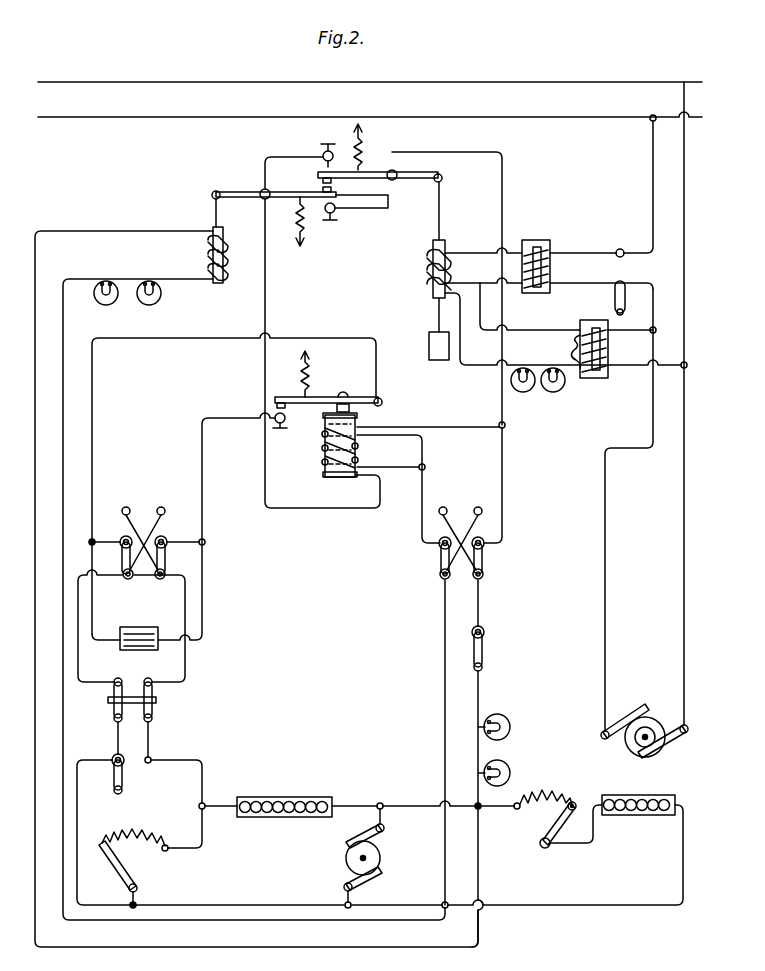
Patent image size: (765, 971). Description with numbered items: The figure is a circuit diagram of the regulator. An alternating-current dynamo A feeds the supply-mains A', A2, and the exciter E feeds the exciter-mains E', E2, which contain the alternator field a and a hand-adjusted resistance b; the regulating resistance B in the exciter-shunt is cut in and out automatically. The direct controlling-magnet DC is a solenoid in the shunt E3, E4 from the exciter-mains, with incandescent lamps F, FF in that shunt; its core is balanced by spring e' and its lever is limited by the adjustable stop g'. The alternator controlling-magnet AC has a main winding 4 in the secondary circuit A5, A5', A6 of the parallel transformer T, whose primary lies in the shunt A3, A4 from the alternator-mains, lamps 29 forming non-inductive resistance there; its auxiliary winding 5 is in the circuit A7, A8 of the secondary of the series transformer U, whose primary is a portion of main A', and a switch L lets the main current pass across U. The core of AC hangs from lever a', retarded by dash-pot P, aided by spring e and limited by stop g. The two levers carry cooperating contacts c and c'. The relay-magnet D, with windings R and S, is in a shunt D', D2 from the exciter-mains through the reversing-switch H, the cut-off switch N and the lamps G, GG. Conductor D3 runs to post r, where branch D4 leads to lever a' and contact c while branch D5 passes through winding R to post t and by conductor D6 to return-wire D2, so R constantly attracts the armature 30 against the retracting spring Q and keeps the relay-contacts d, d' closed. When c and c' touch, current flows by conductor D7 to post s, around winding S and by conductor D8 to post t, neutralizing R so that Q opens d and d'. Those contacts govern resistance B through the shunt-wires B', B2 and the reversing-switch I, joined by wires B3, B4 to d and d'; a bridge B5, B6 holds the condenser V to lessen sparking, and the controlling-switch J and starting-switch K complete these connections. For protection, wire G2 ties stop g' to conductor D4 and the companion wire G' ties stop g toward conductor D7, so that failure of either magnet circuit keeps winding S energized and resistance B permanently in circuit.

The supply-main A2 is at (686, 612).
The supply-main A' is at (603, 427).
The conductor D4 is at (505, 194).
The conductor D3 is at (504, 504).
The post r is at (495, 429).
The contact c is at (370, 180).
The lever a' is at (422, 207).
The spring e is at (365, 147).
The adjustable stop g is at (321, 151).
The wire G2 is at (296, 159).
The spring-mounted contact d' is at (274, 305).
The contact c' is at (341, 186).
The conductor G' is at (361, 213).
The adjustable stop g' is at (324, 223).
The spring e' is at (291, 221).
The alternator controlling-magnet AC is at (418, 269).
The auxiliary winding 5 is at (430, 254).
The main winding 4 is at (431, 291).
The circuit wire A7 is at (478, 253).
The circuit wire A8 is at (517, 289).
The dash-pot P is at (428, 345).
The secondary circuit wire A5 is at (530, 306).
The conductor A5' is at (553, 346).
The secondary circuit wire A6 is at (563, 329).
The shunt wire A3 is at (632, 344).
The shunt wire A4 is at (636, 382).
The series transformer U is at (548, 240).
The switch L is at (632, 286).
The parallel transformer T is at (589, 364).
The incandescent lamps 29 is at (538, 392).
The conductor D7 is at (270, 313).
The post s is at (358, 520).
The wire B3 is at (100, 430).
The armature 30 is at (326, 397).
The retracting spring Q is at (298, 381).
The contact d is at (264, 400).
The relay-magnet D is at (352, 445).
The winding R is at (326, 437).
The winding S is at (325, 470).
The conductor D5 is at (448, 427).
The conductor D8 is at (424, 435).
The post t is at (396, 467).
The conductor D6 is at (421, 523).
The reversing-switch H is at (474, 543).
The circuit wire D' is at (488, 763).
The cut-off switch N is at (487, 648).
The lamp GG is at (511, 727).
The lamp G is at (505, 773).
The return-wire D2 is at (440, 761).
The wire B4 is at (207, 473).
The reversing-switch I is at (143, 533).
The bridge wire B5 is at (90, 560).
The bridge wire B6 is at (204, 552).
The condenser V is at (125, 627).
The controlling-switch J is at (136, 717).
The starting-switch K is at (131, 774).
The shunt-wire B' is at (210, 832).
The shunt-wire B2 is at (206, 792).
The regulating resistance B is at (132, 868).
The exciter-main E' is at (378, 799).
The exciter E is at (370, 858).
The exciter-main E2 is at (517, 855).
The shunt wire E3 is at (70, 283).
The shunt wire E4 is at (105, 233).
The incandescent lamp F is at (108, 307).
The incandescent lamp FF is at (152, 307).
The direct controlling-magnet DC is at (208, 264).
The alternating-current dynamo A is at (647, 735).
The hand-adjusted resistance b is at (561, 819).
The field a is at (638, 816).